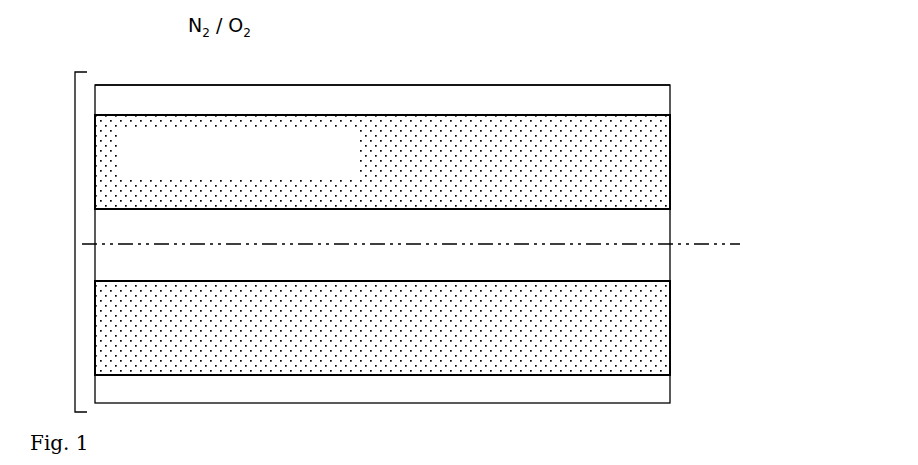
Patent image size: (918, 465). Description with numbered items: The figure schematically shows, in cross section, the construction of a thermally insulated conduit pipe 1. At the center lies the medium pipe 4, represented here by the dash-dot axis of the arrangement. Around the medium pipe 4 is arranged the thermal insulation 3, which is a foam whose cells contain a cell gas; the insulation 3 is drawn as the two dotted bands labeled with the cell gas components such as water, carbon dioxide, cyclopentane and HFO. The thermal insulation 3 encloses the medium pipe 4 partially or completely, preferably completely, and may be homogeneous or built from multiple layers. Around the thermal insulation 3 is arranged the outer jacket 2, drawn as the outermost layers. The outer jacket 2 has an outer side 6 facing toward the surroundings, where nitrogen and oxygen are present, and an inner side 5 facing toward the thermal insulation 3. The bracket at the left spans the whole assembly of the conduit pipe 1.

The conduit pipe 1 is at (75, 243).
The outer jacket 2 is at (680, 101).
The thermal insulation 3 is at (680, 163).
The medium pipe 4 is at (680, 260).
The inner side 5 is at (516, 129).
The outer side 6 is at (516, 76).